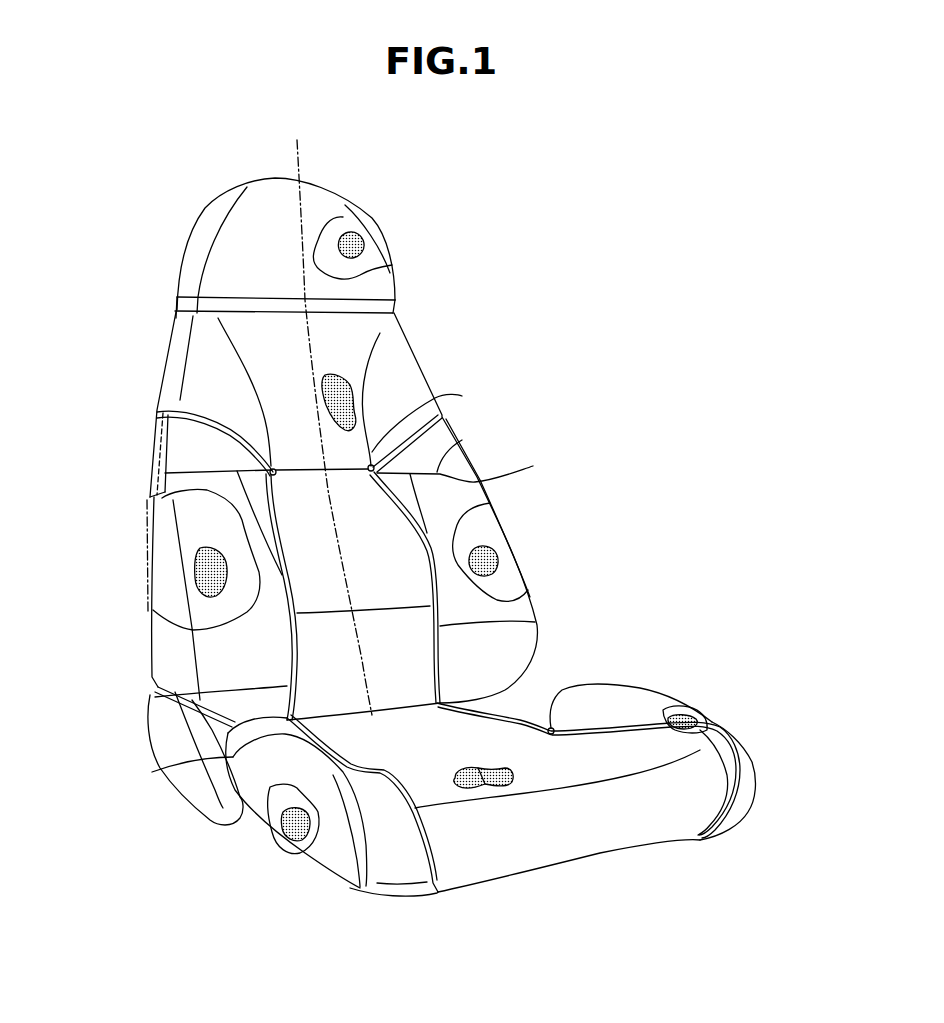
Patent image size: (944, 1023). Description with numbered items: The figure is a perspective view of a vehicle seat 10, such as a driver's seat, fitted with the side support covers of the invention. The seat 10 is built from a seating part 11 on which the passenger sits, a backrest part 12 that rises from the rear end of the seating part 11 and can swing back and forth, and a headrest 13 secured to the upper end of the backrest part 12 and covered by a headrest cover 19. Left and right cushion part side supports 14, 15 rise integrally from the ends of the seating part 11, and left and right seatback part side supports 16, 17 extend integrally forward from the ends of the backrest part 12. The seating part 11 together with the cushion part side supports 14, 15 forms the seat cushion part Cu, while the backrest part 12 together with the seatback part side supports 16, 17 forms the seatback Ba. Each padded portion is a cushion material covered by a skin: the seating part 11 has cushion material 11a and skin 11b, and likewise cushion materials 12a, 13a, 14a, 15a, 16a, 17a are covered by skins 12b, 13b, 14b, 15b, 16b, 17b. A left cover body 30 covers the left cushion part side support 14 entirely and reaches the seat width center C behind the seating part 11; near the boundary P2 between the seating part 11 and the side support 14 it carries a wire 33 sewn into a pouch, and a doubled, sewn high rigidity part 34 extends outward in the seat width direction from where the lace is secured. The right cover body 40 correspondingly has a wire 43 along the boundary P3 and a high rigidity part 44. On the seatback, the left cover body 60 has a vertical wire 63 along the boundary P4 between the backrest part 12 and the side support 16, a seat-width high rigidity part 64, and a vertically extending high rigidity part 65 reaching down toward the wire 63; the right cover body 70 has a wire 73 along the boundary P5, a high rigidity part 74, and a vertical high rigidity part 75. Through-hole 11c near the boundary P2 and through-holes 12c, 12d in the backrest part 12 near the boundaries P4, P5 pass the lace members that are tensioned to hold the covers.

The vehicle seat 10 is at (662, 228).
The seating part 11 is at (402, 861).
The cushion material 11a is at (480, 790).
The skin 11b is at (523, 777).
The through-hole 11c is at (553, 728).
The backrest part 12 is at (485, 340).
The cushion material 12a is at (363, 383).
The skin 12b is at (347, 340).
The through-hole 12c is at (425, 412).
The through-hole 12d is at (230, 380).
The headrest 13 is at (437, 233).
The cushion material 13a is at (353, 248).
The skin 13b is at (349, 222).
The left cushion part side support 14 is at (795, 668).
The cushion material 14a is at (705, 723).
The skin 14b is at (670, 715).
The right cushion part side support 15 is at (275, 836).
The cushion material 15a is at (291, 841).
The skin 15b is at (285, 810).
The left seatback part side support 16 is at (595, 546).
The cushion material 16a is at (490, 558).
The skin 16b is at (476, 532).
The right seatback part side support 17 is at (78, 518).
The cushion material 17a is at (195, 563).
The skin 17b is at (197, 528).
The headrest cover 19 is at (256, 196).
The left cover body 30 is at (747, 794).
The wire 33 is at (637, 722).
The high rigidity part 34 is at (620, 710).
The right cover body 40 is at (407, 864).
The wire 43 is at (345, 864).
The high rigidity part 44 is at (232, 790).
The left cover body 60 is at (530, 597).
The wire 63 is at (533, 617).
The high rigidity part 64 is at (430, 447).
The high rigidity part 65 is at (471, 492).
The right cover body 70 is at (232, 653).
The wire 73 is at (152, 703).
The high rigidity part 74 is at (200, 468).
The high rigidity part 75 is at (165, 473).
The seat width center C is at (328, 415).
The seatback Ba is at (343, 461).
The boundary P5 is at (331, 585).
The boundary P4 is at (423, 579).
The boundary P3 is at (407, 734).
The seat cushion part Cu is at (590, 790).
The boundary P2 is at (595, 764).